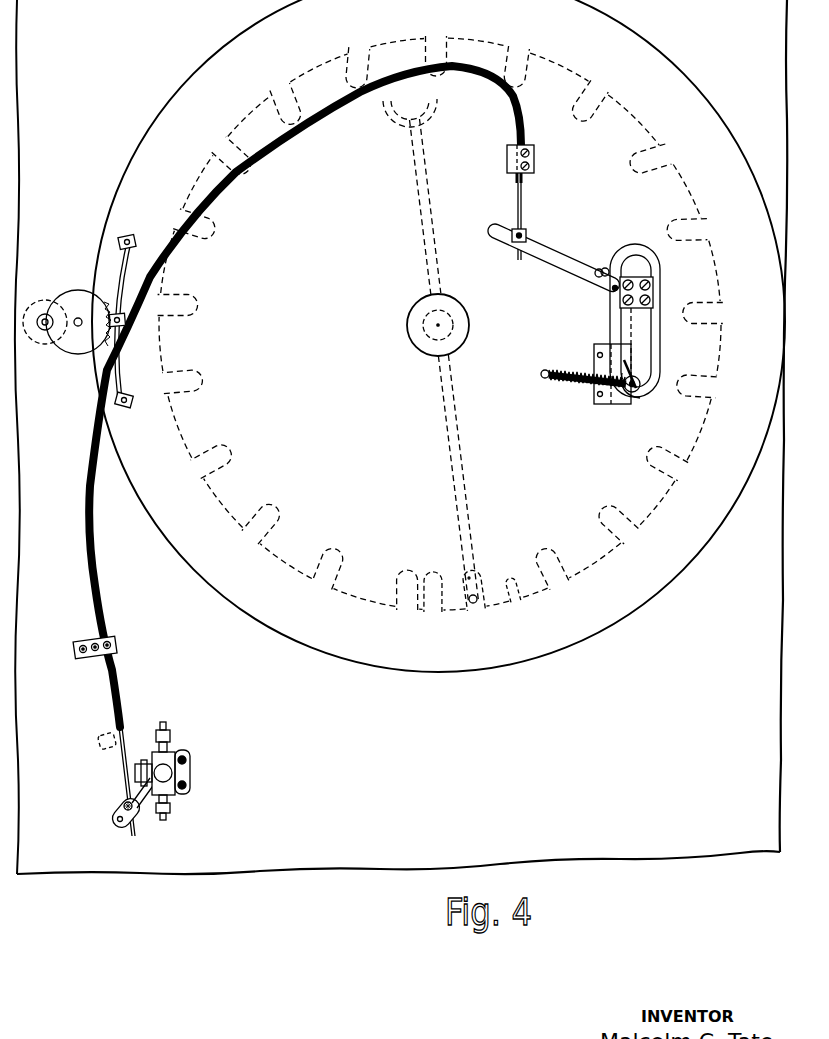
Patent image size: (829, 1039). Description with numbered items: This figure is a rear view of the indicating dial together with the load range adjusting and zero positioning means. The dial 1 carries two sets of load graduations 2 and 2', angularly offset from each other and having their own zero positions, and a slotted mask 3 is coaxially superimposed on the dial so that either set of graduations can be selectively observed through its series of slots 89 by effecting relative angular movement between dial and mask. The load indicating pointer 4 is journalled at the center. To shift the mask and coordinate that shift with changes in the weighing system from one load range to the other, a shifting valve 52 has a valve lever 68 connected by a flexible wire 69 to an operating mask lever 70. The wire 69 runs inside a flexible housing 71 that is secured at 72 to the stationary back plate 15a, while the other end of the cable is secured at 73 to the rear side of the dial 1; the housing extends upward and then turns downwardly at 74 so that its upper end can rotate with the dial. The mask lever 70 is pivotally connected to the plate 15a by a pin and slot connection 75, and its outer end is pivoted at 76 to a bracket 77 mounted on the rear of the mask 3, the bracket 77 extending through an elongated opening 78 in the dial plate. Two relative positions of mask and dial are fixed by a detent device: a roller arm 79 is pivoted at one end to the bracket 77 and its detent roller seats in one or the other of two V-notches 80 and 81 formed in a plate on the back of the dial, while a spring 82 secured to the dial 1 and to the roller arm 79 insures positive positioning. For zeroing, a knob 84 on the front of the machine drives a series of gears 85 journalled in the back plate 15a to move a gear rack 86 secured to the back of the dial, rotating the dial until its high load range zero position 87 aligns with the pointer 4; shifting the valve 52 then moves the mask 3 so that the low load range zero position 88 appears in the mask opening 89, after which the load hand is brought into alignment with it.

The dial 1 is at (664, 44).
The set of load graduations 2 is at (476, 610).
The set of load graduations 2' is at (518, 616).
The slotted mask 3 is at (324, 60).
The load indicating pointer 4 is at (422, 221).
The back plate 15a is at (62, 855).
The shifting valve 52 is at (190, 770).
The valve lever 68 is at (106, 734).
The flexible wire 69 is at (516, 198).
The mask lever 70 is at (535, 243).
The flexible housing 71 is at (119, 695).
The housing securing point 72 is at (88, 658).
The cable support 73 is at (535, 160).
The upper end of housing 74 is at (478, 78).
The pin and slot connection 75 is at (603, 268).
The pivotal connection 76 is at (613, 289).
The bracket 77 is at (640, 277).
The elongated opening 78 is at (660, 339).
The roller arm 79 is at (627, 324).
The V-notch 80 is at (635, 397).
The V-notch 81 is at (600, 360).
The spring 82 is at (559, 384).
The knob 84 is at (40, 312).
The gears 85 is at (72, 338).
The gear rack 86 is at (112, 270).
The high load range zero position 87 is at (477, 597).
The low load range zero position 88 is at (431, 612).
The mask slots 89 is at (464, 578).